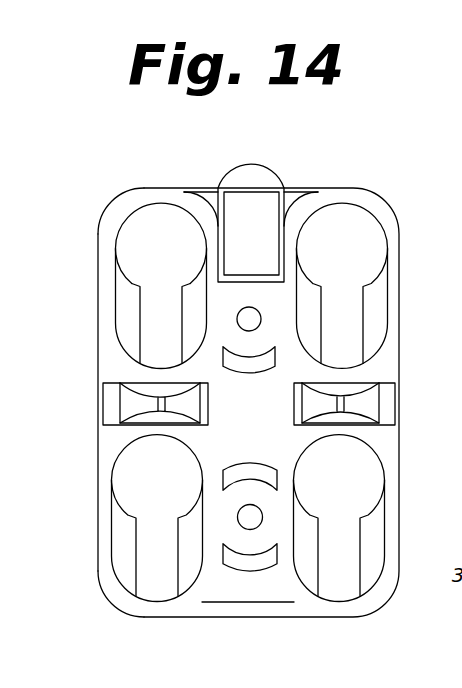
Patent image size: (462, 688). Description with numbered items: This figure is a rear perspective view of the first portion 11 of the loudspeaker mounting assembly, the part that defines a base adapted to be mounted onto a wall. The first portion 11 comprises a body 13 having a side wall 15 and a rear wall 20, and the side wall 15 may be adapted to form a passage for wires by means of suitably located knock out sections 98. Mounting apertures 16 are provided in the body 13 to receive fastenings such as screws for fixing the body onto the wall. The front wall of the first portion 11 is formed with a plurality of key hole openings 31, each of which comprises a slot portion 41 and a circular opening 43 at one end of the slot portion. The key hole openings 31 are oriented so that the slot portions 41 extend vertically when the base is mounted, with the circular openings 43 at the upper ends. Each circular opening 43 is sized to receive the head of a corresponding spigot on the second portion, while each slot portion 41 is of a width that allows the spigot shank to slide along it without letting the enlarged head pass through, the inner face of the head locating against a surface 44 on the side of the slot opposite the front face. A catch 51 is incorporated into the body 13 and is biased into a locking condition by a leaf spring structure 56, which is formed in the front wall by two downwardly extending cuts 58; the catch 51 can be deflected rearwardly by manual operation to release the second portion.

The first portion 11 is at (130, 198).
The body 13 is at (117, 208).
The side wall 15 is at (100, 582).
The mounting aperture 16 is at (237, 517).
The rear wall 20 is at (105, 435).
The key hole opening 31 is at (368, 229).
The slot portion 41 is at (155, 342).
The circular opening 43 is at (135, 253).
The surface 44 is at (132, 322).
The catch 51 is at (272, 182).
The leaf spring structure 56 is at (236, 205).
The cut 58 is at (196, 223).
The knock out section 98 is at (104, 396).